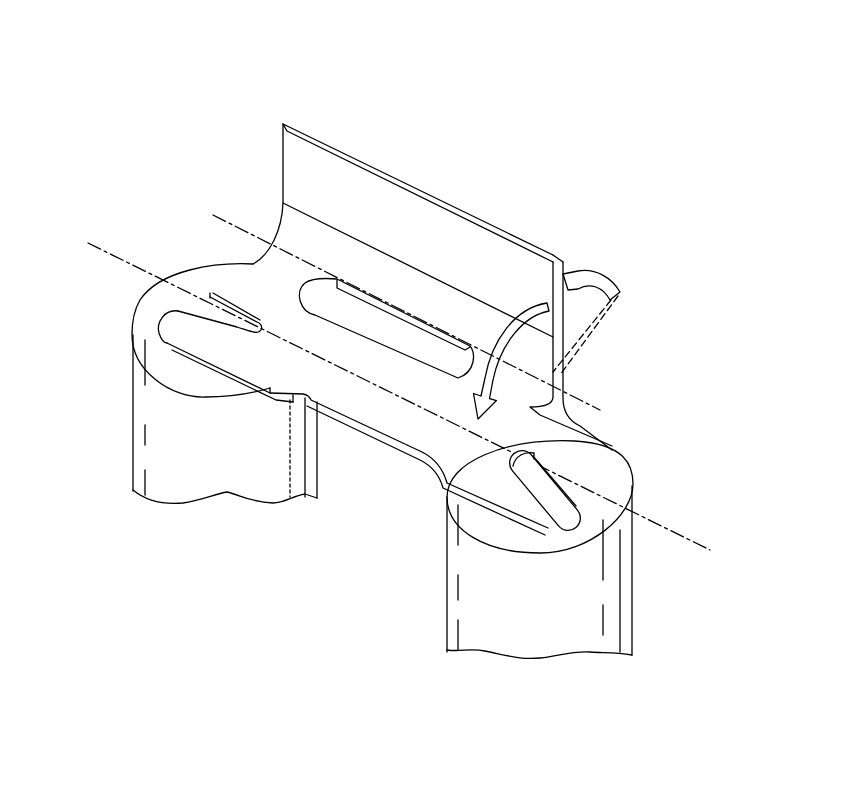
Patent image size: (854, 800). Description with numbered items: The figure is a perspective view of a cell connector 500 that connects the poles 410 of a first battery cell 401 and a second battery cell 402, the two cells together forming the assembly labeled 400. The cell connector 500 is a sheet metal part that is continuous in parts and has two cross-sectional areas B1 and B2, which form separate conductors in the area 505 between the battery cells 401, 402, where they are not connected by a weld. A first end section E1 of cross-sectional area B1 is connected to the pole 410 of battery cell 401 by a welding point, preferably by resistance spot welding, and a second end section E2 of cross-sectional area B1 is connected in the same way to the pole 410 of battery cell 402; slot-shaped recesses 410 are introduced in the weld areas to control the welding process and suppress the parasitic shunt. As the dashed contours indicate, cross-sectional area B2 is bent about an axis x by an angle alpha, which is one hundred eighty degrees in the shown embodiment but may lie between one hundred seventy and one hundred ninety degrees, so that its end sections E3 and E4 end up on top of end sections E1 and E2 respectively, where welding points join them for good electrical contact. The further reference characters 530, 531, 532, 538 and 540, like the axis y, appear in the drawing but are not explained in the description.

The tube assembly 400 is at (387, 662).
The first battery cell 401 is at (227, 492).
The second battery cell 402 is at (485, 604).
The pole 410 is at (210, 296).
The cell connector 500 is at (536, 149).
The area of cell connector 505 is at (424, 83).
The wall 530 is at (540, 243).
The first pad 531 is at (121, 306).
The second pad 532 is at (641, 455).
The upper edge of wall 538 is at (352, 183).
The slot 540 is at (259, 322).
The first end section E1 is at (154, 358).
The second end section E2 is at (551, 553).
The end section E3 is at (278, 100).
The end section E4 is at (587, 230).
The cross-sectional area B1 is at (389, 400).
The cross-sectional area B2 is at (432, 227).
The axis x is at (417, 323).
The y axis y is at (411, 405).
The angle alpha is at (512, 361).